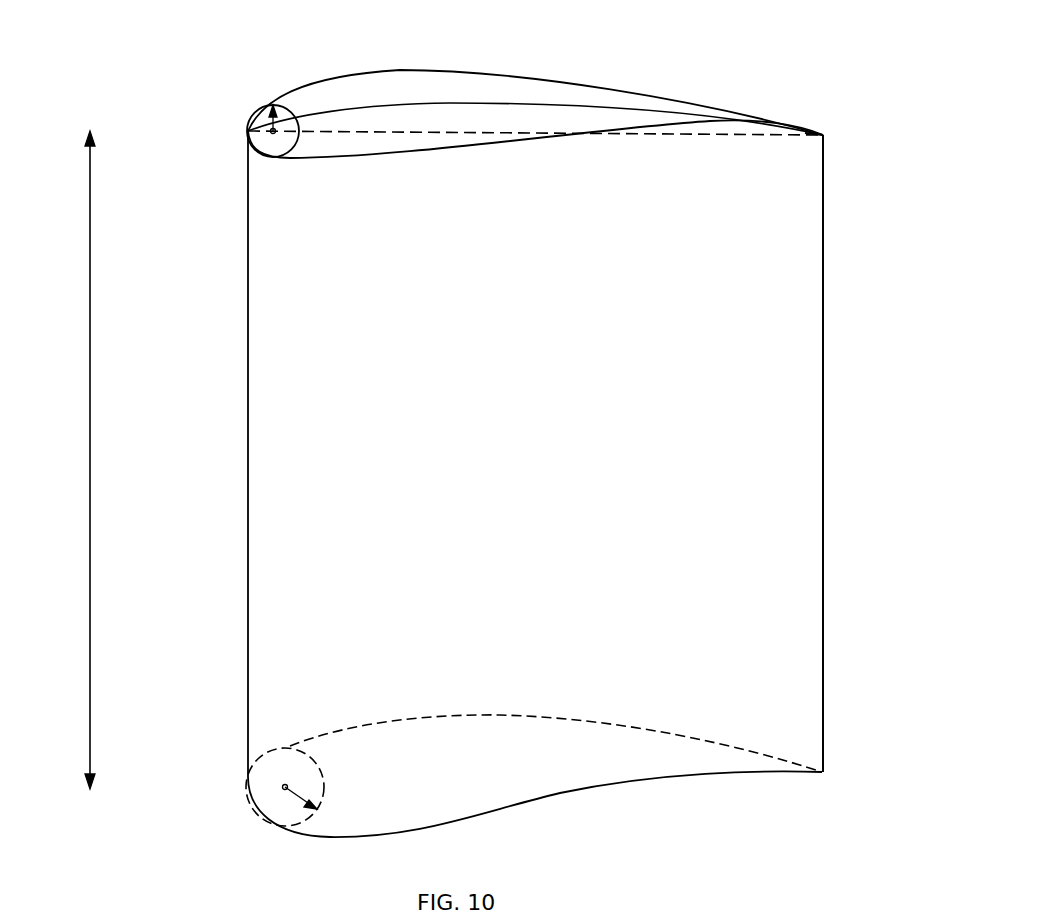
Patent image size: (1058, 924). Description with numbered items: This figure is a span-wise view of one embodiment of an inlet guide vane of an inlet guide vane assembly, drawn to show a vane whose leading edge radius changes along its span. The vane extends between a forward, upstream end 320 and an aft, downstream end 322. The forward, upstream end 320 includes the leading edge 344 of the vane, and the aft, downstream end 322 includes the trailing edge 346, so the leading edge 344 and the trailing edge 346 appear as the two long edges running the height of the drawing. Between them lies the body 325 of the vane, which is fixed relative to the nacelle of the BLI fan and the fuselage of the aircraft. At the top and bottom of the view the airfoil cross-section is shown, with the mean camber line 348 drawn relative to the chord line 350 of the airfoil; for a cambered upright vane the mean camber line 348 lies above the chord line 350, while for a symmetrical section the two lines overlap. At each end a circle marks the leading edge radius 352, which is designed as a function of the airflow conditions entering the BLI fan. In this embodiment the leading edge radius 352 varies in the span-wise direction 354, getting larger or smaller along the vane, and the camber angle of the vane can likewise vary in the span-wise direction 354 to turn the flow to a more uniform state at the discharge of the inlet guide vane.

The forward, upstream end 320 is at (219, 122).
The aft, downstream end 322 is at (842, 127).
The body 325 is at (513, 71).
The leading edge 344 is at (248, 337).
The trailing edge 346 is at (824, 445).
The mean camber line 348 is at (318, 113).
The chord line 350 is at (398, 132).
The leading edge radius 352 is at (265, 118).
The span-wise direction 354 is at (92, 455).